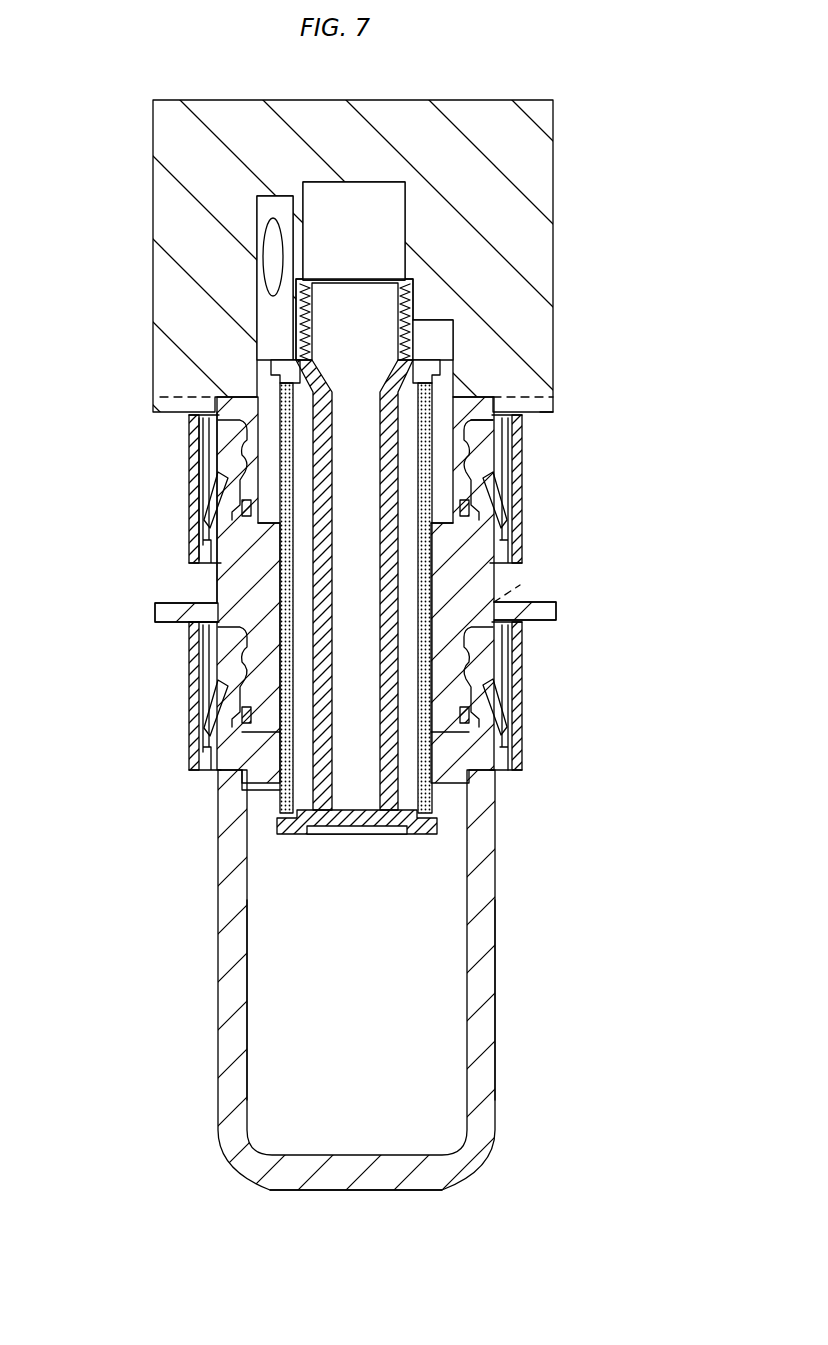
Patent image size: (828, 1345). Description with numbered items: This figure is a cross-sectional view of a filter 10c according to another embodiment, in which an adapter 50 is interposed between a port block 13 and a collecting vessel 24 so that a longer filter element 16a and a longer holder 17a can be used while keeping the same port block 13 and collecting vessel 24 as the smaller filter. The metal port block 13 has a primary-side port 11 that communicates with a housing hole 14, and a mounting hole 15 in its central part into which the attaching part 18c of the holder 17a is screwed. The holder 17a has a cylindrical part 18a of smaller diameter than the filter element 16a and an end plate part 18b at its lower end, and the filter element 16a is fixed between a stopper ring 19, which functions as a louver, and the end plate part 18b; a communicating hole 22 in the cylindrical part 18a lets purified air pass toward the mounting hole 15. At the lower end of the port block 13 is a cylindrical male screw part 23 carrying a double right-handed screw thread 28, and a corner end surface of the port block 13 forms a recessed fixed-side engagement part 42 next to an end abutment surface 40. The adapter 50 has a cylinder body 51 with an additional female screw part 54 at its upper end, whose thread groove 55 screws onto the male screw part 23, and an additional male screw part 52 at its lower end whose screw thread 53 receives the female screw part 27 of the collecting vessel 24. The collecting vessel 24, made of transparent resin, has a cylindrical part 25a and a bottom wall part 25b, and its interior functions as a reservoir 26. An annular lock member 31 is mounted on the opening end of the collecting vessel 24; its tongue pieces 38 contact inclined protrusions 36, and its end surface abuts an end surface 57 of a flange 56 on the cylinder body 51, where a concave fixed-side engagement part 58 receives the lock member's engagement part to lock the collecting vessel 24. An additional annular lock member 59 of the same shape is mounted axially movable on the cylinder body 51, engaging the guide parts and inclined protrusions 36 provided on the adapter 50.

The filter 10c is at (575, 245).
The primary-side port 11 is at (272, 250).
The port block 13 is at (512, 136).
The housing hole 14 is at (440, 340).
The mounting hole 15 is at (395, 192).
The filter element 16a is at (282, 575).
The holder 17a is at (302, 792).
The cylindrical part 18a is at (303, 775).
The end plate part 18b is at (357, 822).
The attaching part 18c is at (410, 298).
The stopper ring 19 is at (428, 372).
The communicating hole 22 is at (284, 386).
The male screw part 23 is at (549, 488).
The collecting vessel 24 is at (418, 1028).
The cylindrical part 25a is at (480, 1030).
The bottom wall part 25b is at (343, 1175).
The reservoir 26 is at (372, 1084).
The female screw part 27 is at (487, 645).
The screw thread 28 is at (490, 436).
The annular lock member 31 is at (196, 752).
The inclined protrusion 36 is at (509, 517).
The tongue piece 38 is at (507, 492).
The end abutment surface 40 is at (160, 483).
The fixed-side engagement part 42 is at (555, 407).
The adapter 50 is at (568, 679).
The cylinder body 51 is at (232, 588).
The additional male screw part 52 is at (465, 692).
The screw thread 53 is at (478, 662).
The additional female screw part 54 is at (493, 456).
The thread groove 55 is at (228, 468).
The flange 56 is at (180, 613).
The end surface 57 is at (548, 625).
The concave fixed-side engagement part 58 is at (528, 590).
The additional annular lock member 59 is at (197, 505).